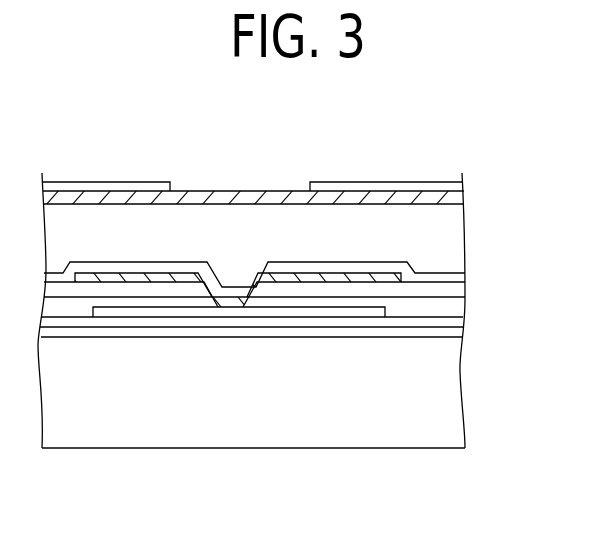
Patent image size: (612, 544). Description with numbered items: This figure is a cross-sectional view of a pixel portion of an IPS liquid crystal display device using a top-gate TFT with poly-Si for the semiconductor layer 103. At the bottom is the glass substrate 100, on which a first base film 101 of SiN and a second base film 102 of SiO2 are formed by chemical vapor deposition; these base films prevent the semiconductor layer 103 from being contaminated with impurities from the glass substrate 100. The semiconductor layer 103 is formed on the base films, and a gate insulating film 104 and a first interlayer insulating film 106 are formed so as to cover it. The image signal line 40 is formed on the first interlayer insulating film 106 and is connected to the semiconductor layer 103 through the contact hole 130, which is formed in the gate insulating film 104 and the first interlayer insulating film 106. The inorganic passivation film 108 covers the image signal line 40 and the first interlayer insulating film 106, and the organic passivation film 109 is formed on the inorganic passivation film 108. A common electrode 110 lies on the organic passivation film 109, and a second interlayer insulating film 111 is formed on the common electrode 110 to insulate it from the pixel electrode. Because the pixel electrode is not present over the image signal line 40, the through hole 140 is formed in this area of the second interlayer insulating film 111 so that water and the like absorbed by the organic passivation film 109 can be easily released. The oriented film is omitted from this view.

The image signal line 40 is at (155, 277).
The glass substrate 100 is at (433, 393).
The first base film 101 is at (448, 335).
The second base film 102 is at (448, 322).
The semiconductor layer 103 is at (343, 313).
The gate insulating film 104 is at (407, 310).
The first interlayer insulating film 106 is at (447, 290).
The inorganic passivation film 108 is at (445, 280).
The organic passivation film 109 is at (445, 230).
The common electrode 110 is at (445, 198).
The second interlayer insulating film 111 is at (445, 187).
The contact hole 130 is at (253, 307).
The through hole 140 is at (242, 188).